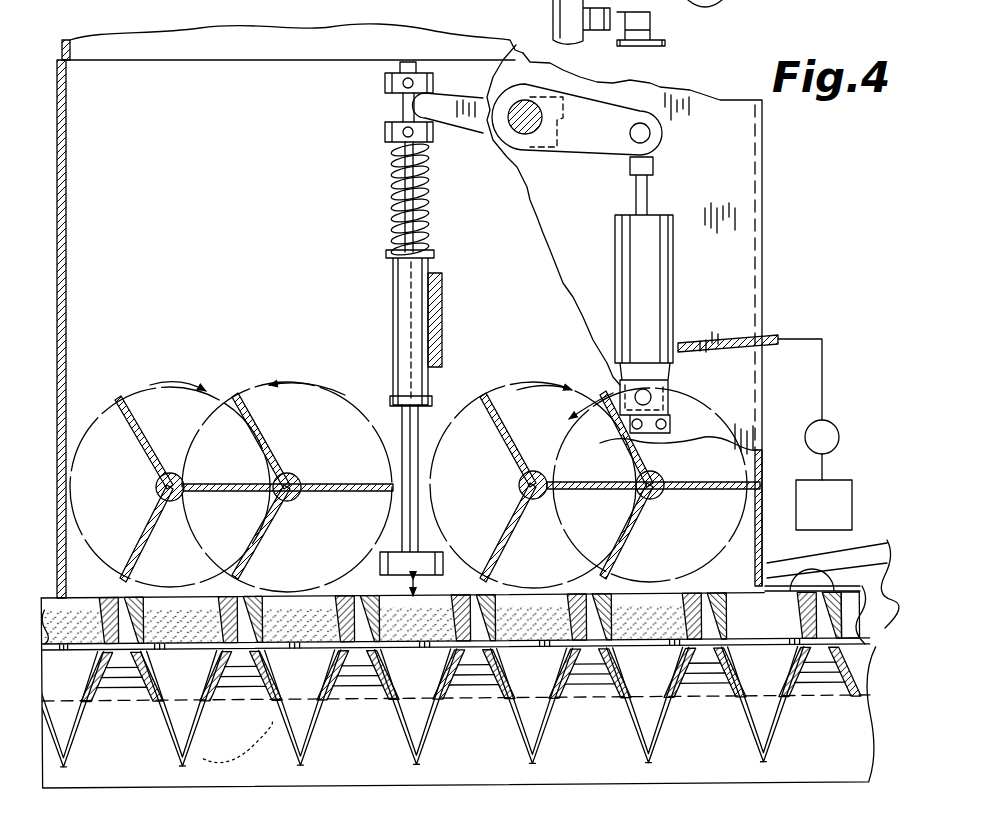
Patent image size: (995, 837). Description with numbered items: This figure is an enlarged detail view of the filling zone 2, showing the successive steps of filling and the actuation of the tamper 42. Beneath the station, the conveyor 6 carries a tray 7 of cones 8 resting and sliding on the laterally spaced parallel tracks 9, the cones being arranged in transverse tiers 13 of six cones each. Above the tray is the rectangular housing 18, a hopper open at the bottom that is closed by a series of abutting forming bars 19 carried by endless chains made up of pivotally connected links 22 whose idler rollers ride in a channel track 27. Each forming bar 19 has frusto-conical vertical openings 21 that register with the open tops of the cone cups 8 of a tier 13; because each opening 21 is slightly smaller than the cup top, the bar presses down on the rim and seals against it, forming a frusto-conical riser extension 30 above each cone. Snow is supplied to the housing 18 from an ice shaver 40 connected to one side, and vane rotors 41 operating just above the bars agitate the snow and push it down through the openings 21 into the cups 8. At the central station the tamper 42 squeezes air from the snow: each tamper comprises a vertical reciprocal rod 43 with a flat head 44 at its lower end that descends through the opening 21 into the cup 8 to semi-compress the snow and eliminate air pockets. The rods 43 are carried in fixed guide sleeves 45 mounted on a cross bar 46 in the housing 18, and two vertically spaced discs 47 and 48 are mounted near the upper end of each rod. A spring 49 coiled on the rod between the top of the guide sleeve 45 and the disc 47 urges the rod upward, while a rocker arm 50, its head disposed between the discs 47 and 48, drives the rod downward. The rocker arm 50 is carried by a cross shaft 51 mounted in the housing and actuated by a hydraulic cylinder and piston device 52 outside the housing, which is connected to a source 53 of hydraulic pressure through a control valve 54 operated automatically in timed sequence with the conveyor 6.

The filling zone 2 is at (737, 299).
The conveyor 6 is at (820, 678).
The tray 7 is at (213, 687).
The cone 8 is at (75, 716).
The track 9 is at (702, 672).
The tier 13 is at (176, 761).
The housing 18 is at (762, 181).
The forming bar 19 is at (138, 600).
The frusto-conical vertical opening 21 is at (320, 600).
The link 22 is at (812, 578).
The channel track 27 is at (870, 567).
The frusto-conical riser extension 30 is at (83, 600).
The ice shaver 40 is at (127, 38).
The vane rotor 41 is at (222, 430).
The tamper 42 is at (391, 320).
The vertical reciprocal rod 43 is at (423, 415).
The flat head 44 is at (440, 565).
The fixed guide sleeve 45 is at (398, 277).
The cross bar 46 is at (441, 298).
The disc 47 is at (385, 130).
The disc 48 is at (385, 78).
The spring 49 is at (424, 206).
The rocker arm 50 is at (470, 130).
The cross shaft 51 is at (540, 112).
The hydraulic cylinder and piston device 52 is at (634, 212).
The source of hydraulic pressure 53 is at (835, 517).
The control valve 54 is at (840, 437).